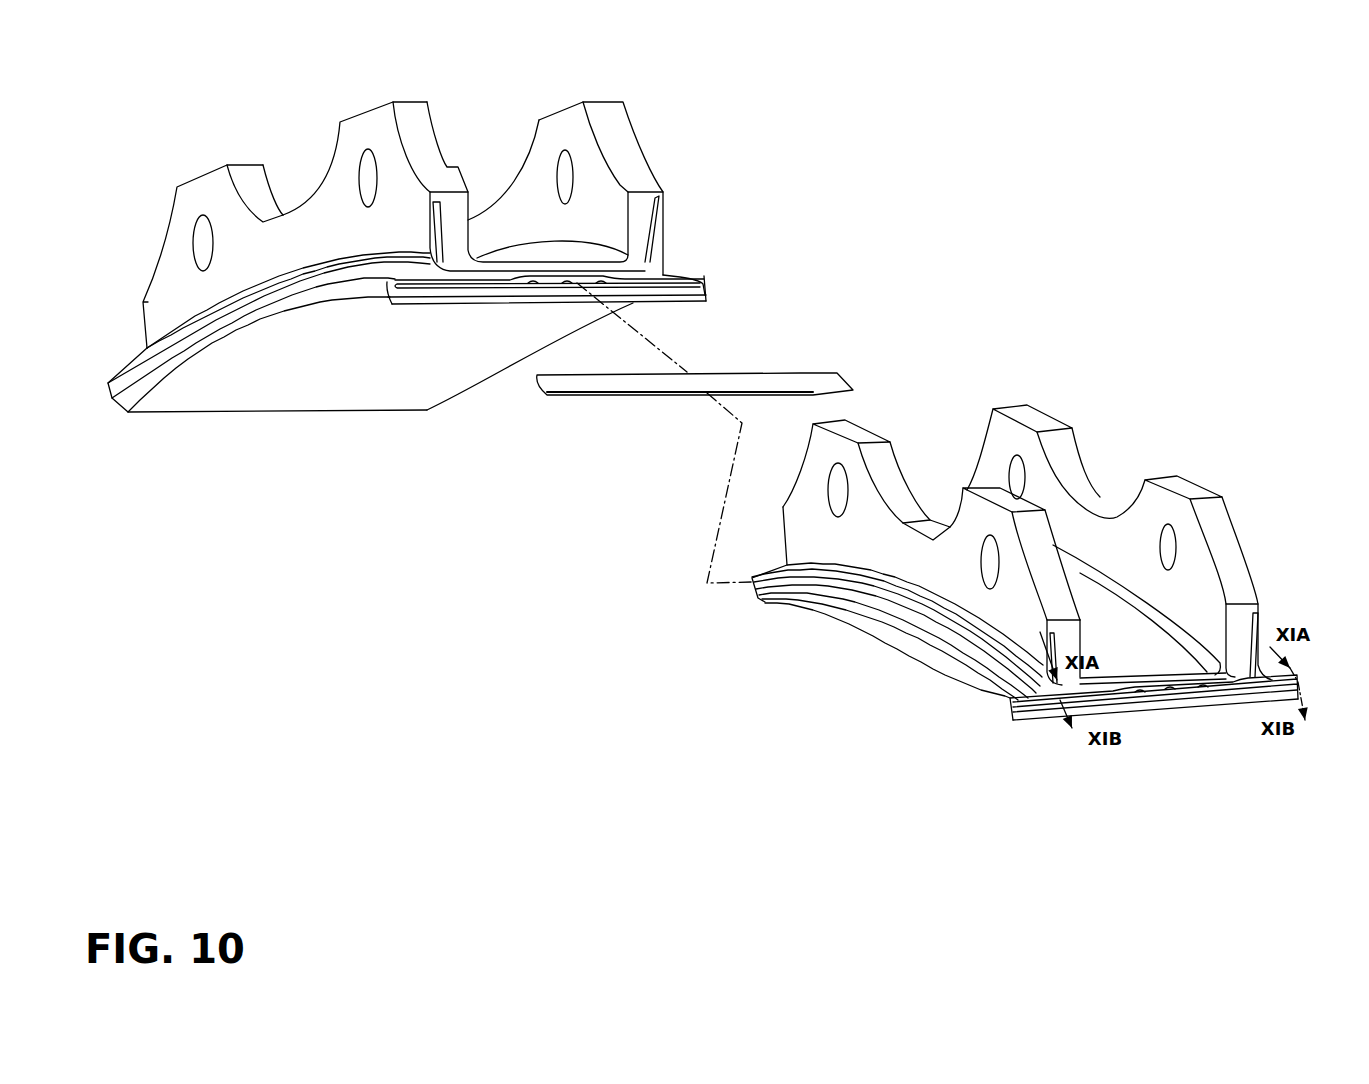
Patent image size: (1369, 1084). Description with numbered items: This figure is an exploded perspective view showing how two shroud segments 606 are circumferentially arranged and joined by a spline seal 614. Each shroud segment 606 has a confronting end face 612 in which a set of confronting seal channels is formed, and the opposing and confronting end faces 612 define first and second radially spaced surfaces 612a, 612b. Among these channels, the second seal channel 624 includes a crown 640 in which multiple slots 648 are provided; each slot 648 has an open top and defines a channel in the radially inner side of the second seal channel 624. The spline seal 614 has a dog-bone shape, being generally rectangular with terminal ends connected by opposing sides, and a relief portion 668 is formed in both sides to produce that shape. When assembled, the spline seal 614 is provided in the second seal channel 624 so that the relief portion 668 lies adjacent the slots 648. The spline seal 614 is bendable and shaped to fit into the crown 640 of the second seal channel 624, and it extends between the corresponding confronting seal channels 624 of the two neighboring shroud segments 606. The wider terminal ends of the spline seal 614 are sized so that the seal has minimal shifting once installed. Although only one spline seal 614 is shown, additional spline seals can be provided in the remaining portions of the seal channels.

The shroud segment 606 is at (678, 148).
The confronting end face 612 is at (665, 272).
The first radially spaced surface 612a is at (608, 253).
The second radially spaced surface 612b is at (633, 303).
The spline seal 614 is at (825, 352).
The second seal channel 624 is at (470, 292).
The crown 640 is at (557, 290).
The slot 648 is at (600, 282).
The relief portion 668 is at (640, 395).